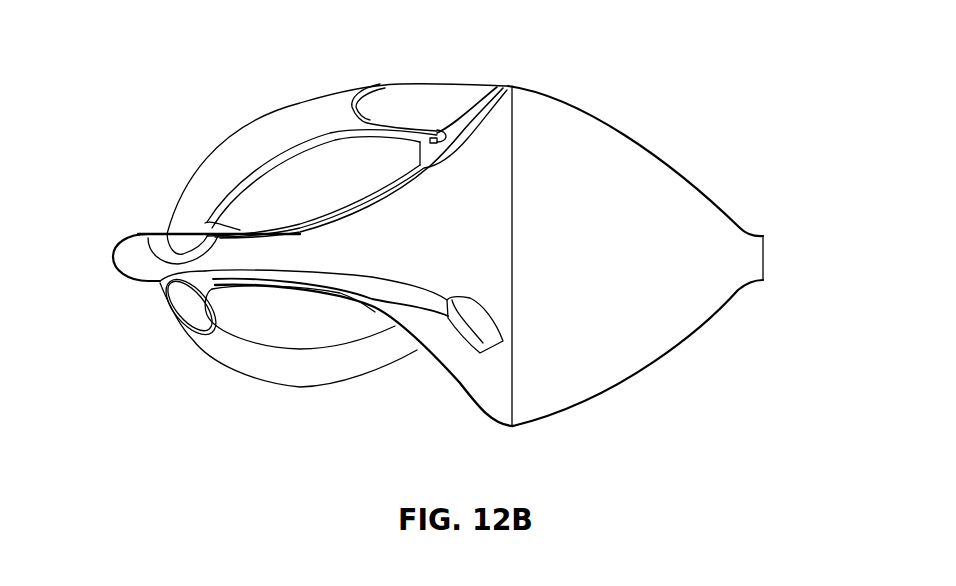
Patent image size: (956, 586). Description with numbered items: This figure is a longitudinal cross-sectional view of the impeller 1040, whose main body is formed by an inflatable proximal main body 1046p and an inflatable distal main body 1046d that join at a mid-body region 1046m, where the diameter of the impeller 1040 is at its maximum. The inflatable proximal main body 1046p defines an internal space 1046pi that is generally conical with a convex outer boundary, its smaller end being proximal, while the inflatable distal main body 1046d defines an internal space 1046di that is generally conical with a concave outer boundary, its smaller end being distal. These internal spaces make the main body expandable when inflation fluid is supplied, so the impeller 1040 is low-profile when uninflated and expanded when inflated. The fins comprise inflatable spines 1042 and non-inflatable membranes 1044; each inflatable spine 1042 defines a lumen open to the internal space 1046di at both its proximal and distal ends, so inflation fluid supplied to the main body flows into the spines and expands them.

The impeller 1040 is at (708, 146).
The inflatable spines 1042 is at (252, 157).
The non-inflatable membranes 1044 is at (307, 312).
The mid-body region 1046m is at (505, 86).
The inflatable distal main body 1046d is at (459, 386).
The inflatable proximal main body 1046p is at (630, 377).
The internal space 1046di is at (463, 273).
The internal space 1046pi is at (660, 273).